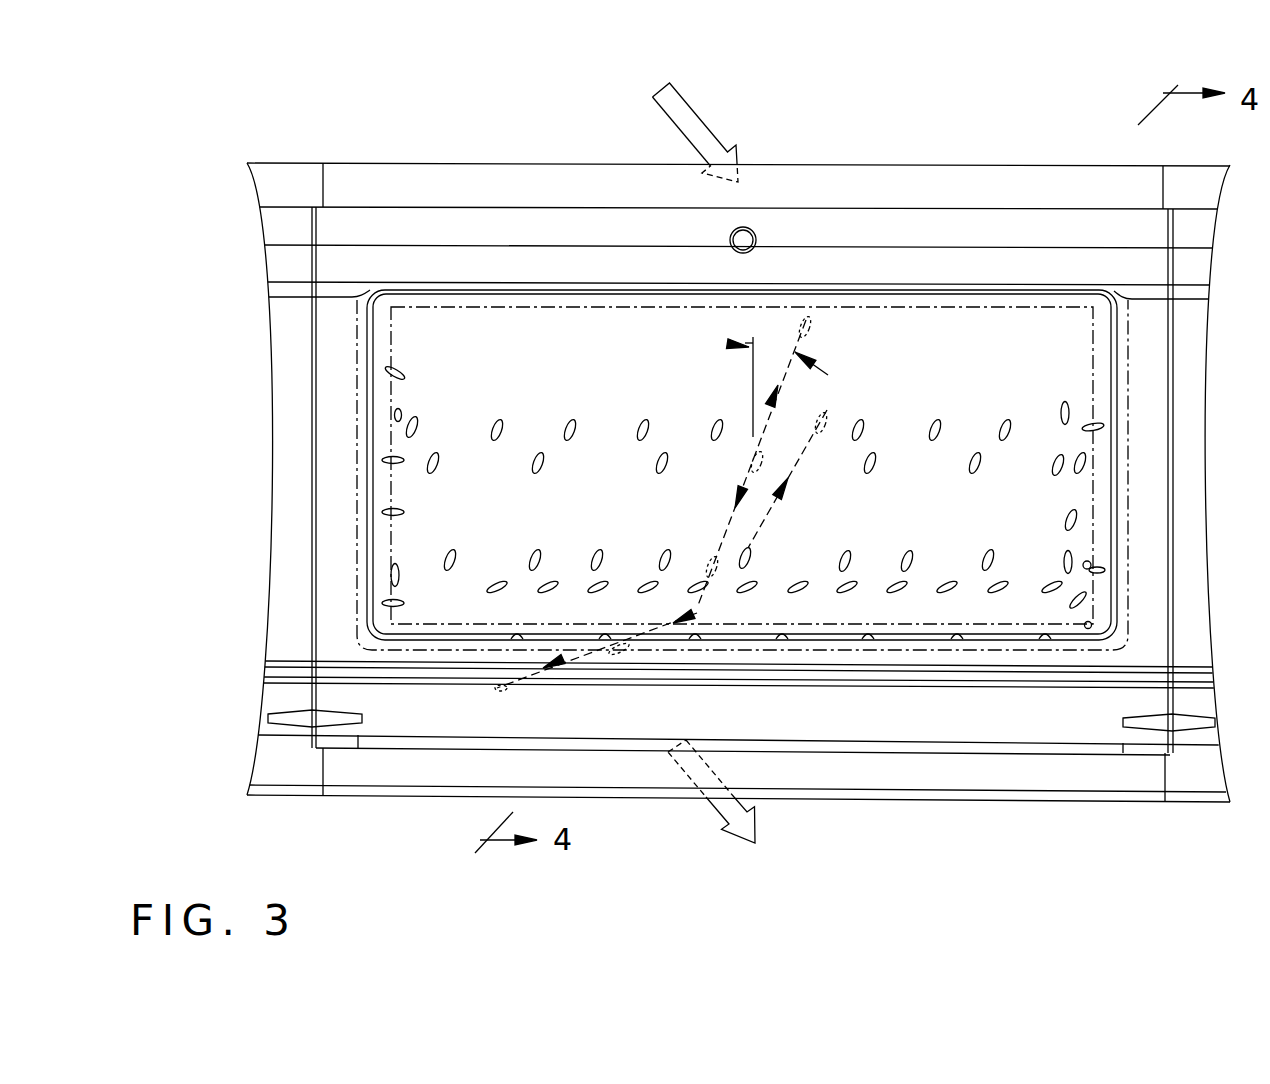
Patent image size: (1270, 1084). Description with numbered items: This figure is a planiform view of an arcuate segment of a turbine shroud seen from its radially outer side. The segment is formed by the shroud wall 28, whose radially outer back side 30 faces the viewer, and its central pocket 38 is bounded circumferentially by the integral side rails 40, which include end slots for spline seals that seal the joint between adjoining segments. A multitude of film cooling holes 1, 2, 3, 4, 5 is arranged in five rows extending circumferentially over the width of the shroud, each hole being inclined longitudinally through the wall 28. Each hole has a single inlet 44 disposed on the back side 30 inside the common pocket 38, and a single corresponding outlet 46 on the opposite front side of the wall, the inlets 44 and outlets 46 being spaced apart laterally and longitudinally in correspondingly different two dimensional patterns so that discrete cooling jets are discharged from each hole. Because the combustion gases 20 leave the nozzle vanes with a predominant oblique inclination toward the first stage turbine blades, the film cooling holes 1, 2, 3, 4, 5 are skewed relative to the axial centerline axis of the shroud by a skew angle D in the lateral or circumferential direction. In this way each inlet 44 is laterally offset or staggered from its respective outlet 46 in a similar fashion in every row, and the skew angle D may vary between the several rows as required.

The combustion gases 20 is at (700, 112).
The shroud wall 28 is at (263, 470).
The back side 30 is at (1017, 359).
The central pocket 38 is at (465, 290).
The side rails 40 is at (1170, 443).
The inlet 44 is at (973, 464).
The outlet 46 is at (800, 320).
The film cooling hole 1 is at (770, 406).
The film cooling hole 2 is at (777, 497).
The film cooling hole 3 is at (743, 487).
The film cooling hole 4 is at (693, 614).
The film cooling hole 5 is at (563, 659).
The skew angle D is at (727, 344).